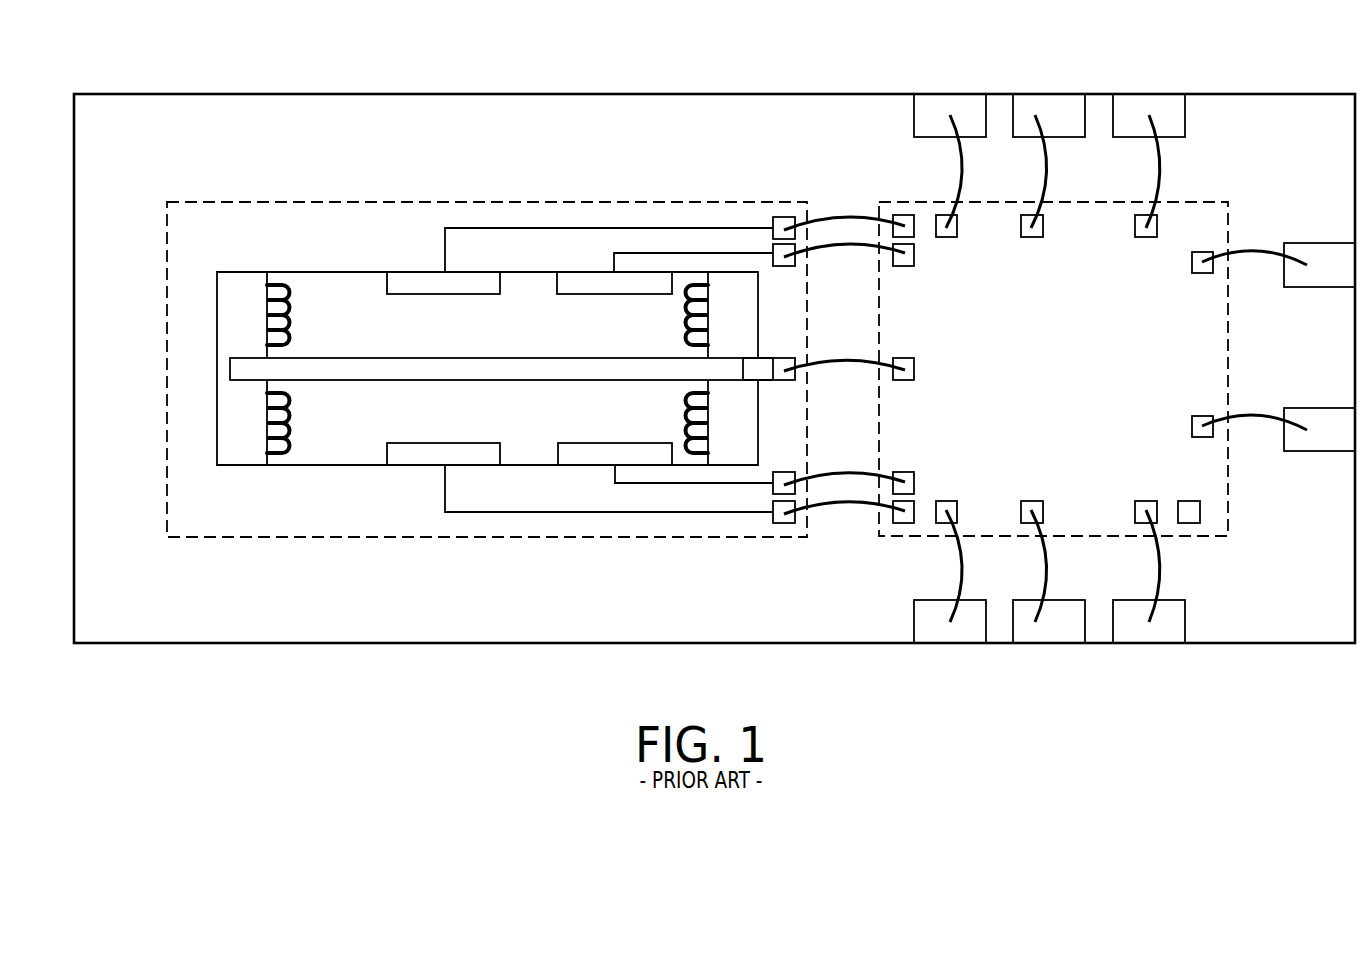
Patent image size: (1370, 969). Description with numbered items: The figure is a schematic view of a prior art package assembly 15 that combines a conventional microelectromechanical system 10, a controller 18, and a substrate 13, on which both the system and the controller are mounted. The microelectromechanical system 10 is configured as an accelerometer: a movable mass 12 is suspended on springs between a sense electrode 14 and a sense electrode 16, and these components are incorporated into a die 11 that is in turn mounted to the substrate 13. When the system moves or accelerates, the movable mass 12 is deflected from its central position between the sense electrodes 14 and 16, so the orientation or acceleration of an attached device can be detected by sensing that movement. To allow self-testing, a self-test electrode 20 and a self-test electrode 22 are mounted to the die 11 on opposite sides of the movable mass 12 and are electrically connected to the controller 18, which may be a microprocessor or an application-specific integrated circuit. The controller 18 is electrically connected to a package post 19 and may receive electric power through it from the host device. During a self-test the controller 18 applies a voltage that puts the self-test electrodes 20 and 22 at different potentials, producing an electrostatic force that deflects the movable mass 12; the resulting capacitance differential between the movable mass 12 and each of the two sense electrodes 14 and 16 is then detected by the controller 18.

The conventional microelectromechanical system 10 is at (428, 192).
The die 11 is at (631, 200).
The movable mass 12 is at (508, 358).
The substrate 13 is at (198, 94).
The sense electrode 14 is at (617, 443).
The package assembly 15 is at (646, 90).
The sense electrode 16 is at (597, 295).
The controller 18 is at (1218, 350).
The package post 19 is at (935, 102).
The self-test electrode 20 is at (463, 443).
The self-test electrode 22 is at (428, 294).